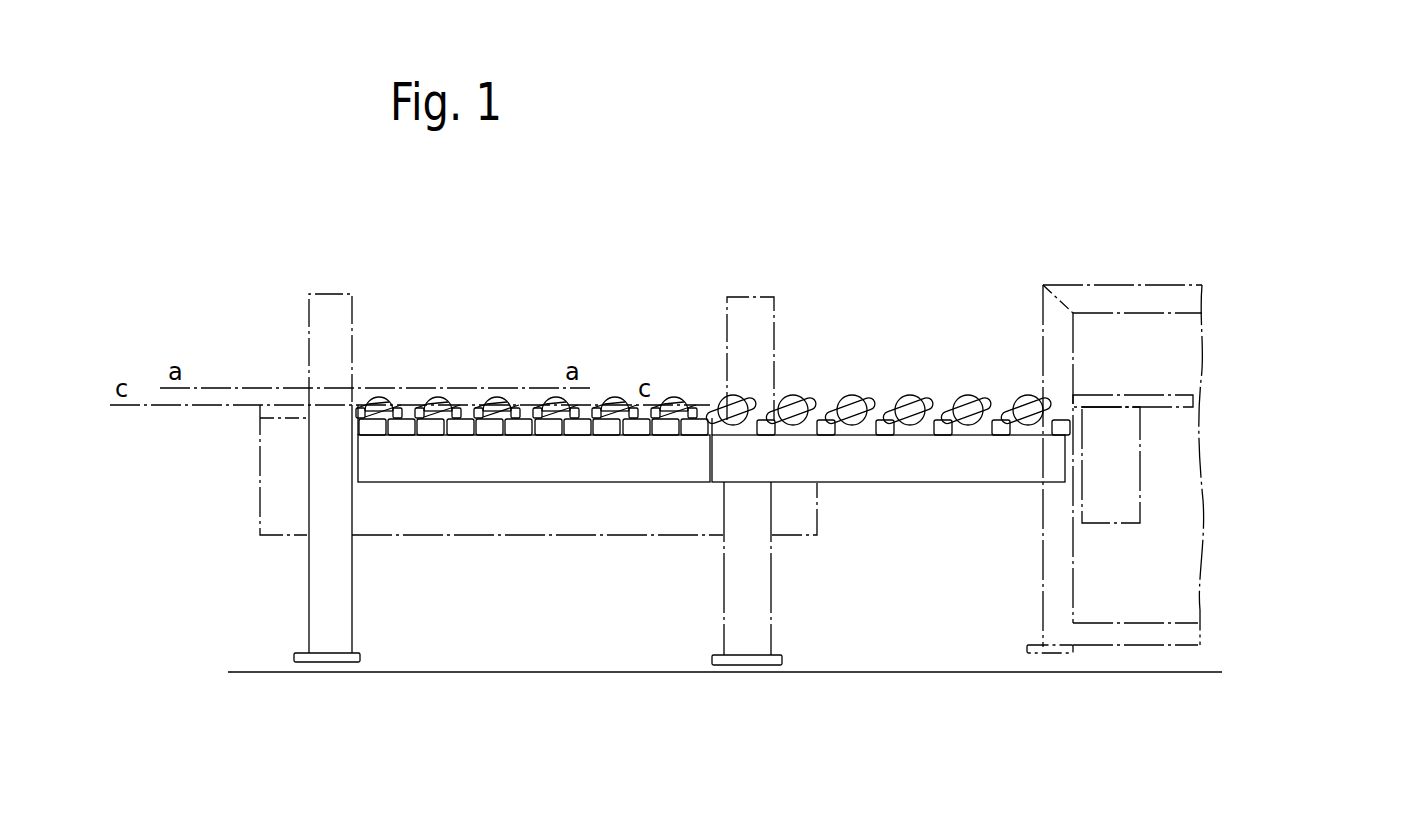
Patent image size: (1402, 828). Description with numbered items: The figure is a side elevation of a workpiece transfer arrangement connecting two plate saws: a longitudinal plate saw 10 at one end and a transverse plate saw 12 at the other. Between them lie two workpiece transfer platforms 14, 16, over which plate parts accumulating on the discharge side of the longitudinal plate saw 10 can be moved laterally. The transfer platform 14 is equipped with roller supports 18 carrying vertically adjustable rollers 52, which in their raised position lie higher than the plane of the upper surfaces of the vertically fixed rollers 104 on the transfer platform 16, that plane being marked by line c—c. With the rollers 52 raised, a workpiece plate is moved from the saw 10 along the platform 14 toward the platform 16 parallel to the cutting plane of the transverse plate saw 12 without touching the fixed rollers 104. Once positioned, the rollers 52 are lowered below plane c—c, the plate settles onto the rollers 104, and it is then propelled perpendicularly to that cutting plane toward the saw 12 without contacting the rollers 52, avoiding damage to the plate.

The longitudinal plate saw 10 is at (1208, 334).
The transverse plate saw 12 is at (300, 343).
The workpiece transfer platform 14 is at (943, 485).
The workpiece transfer platform 16 is at (503, 485).
The roller supports 18 is at (958, 391).
The vertically adjustable rollers 52 is at (906, 395).
The vertically fixed rollers 104 is at (517, 392).